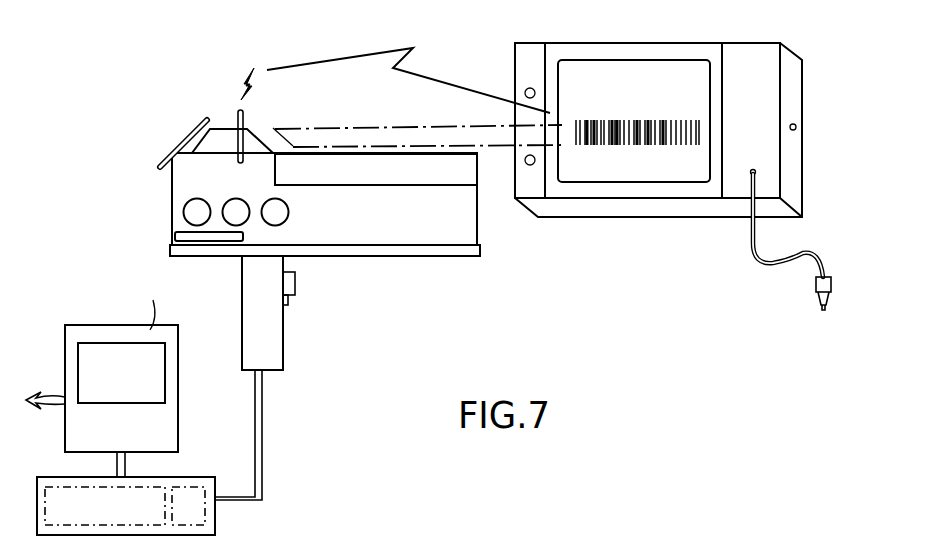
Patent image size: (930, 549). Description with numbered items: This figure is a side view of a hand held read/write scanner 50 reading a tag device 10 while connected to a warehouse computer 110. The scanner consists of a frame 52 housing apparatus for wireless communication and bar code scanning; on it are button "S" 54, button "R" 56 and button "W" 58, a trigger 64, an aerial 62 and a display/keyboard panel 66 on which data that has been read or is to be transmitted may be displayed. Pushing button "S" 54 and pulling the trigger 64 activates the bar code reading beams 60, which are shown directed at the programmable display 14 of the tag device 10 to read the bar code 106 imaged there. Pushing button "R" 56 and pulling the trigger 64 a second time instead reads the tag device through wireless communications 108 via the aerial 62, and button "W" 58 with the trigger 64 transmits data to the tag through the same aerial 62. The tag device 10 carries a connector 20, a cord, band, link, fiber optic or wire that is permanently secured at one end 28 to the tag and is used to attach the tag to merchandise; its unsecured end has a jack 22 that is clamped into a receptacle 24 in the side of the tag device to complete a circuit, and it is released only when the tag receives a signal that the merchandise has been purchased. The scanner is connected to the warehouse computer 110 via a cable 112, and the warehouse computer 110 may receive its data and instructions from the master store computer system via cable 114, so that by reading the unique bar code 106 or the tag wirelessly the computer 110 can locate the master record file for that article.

The tag device 10 is at (748, 45).
The programmable display 14 is at (588, 172).
The connector 20 is at (760, 263).
The jack 22 is at (834, 278).
The receptacle 24 is at (797, 125).
The end 28 is at (756, 172).
The read/write scanner 50 is at (396, 185).
The frame 52 is at (422, 258).
The button "S" 54 is at (184, 213).
The button "R" 56 is at (233, 224).
The button "W" 58 is at (265, 203).
The bar code reading beams 60 is at (497, 142).
The aerial 62 is at (237, 112).
The trigger 64 is at (295, 285).
The display/keyboard panel 66 is at (188, 132).
The bar code 106 is at (648, 153).
The wireless communications 108 is at (373, 50).
The warehouse computer 110 is at (180, 362).
The cable 112 is at (263, 432).
The cable 114 is at (50, 388).